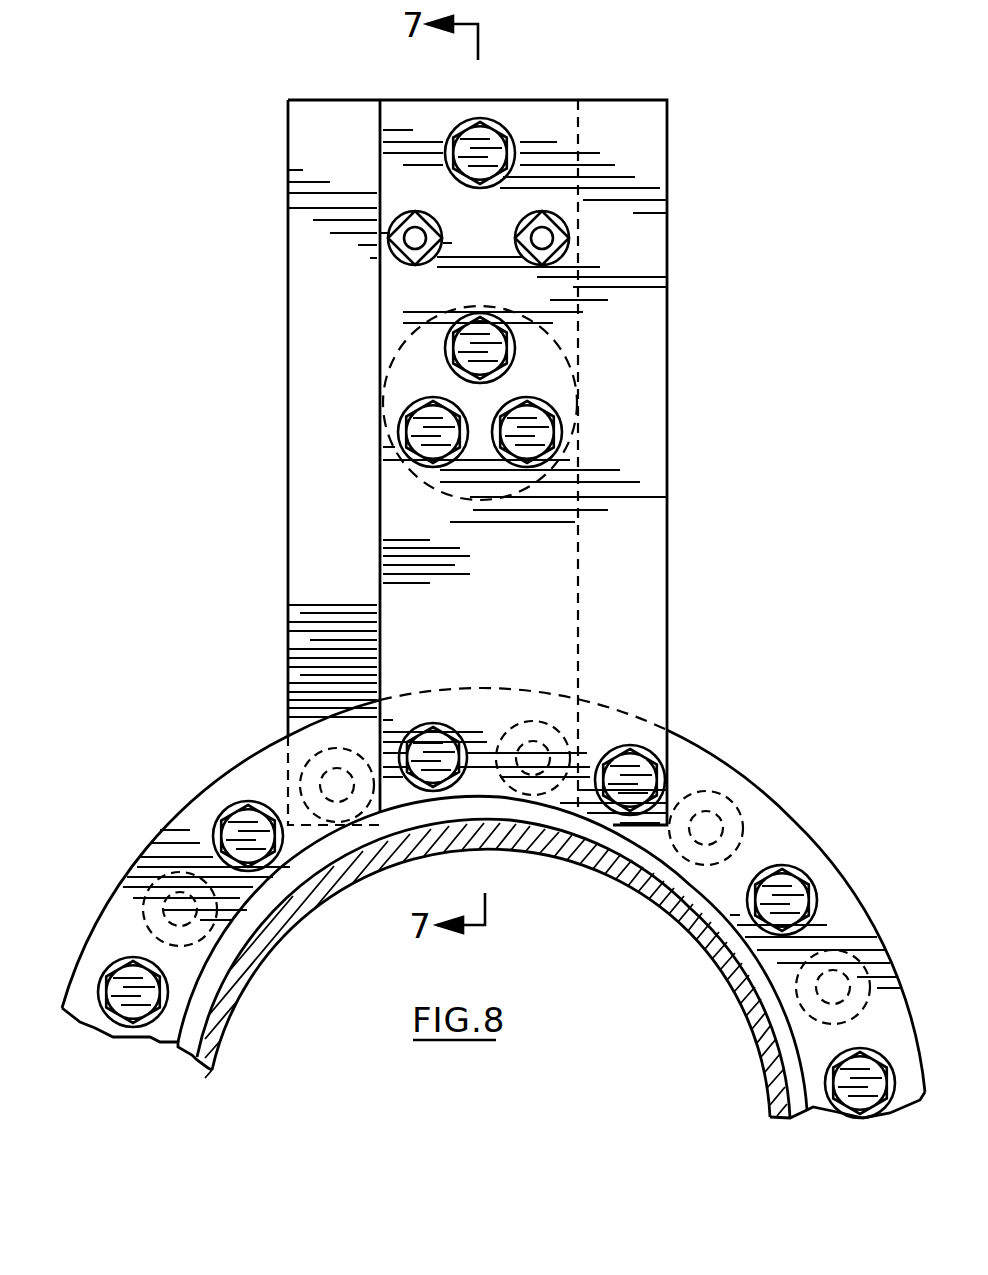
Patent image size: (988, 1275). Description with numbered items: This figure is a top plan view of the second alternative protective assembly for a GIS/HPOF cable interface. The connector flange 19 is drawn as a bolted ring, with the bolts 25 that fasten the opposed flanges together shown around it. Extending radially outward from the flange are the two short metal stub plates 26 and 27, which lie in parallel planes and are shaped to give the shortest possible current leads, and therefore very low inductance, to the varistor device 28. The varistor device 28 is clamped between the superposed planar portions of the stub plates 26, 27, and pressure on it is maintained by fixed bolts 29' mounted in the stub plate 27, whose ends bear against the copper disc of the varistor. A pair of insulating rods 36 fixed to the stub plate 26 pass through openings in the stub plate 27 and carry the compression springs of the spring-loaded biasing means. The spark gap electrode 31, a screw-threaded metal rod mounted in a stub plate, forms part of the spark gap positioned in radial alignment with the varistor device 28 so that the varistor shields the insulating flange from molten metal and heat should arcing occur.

The flange 19 is at (777, 803).
The bolts 25 is at (632, 745).
The stub plate 26 is at (328, 98).
The stub plate 27 is at (558, 98).
The varistor device 28 is at (572, 368).
The bolt 29' is at (515, 390).
The spark gap electrode 31 is at (500, 133).
The insulating rods 36 is at (415, 237).